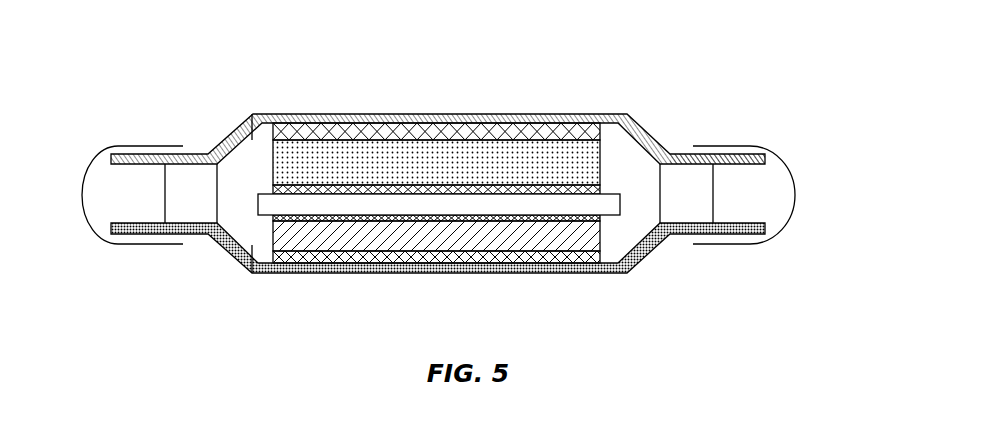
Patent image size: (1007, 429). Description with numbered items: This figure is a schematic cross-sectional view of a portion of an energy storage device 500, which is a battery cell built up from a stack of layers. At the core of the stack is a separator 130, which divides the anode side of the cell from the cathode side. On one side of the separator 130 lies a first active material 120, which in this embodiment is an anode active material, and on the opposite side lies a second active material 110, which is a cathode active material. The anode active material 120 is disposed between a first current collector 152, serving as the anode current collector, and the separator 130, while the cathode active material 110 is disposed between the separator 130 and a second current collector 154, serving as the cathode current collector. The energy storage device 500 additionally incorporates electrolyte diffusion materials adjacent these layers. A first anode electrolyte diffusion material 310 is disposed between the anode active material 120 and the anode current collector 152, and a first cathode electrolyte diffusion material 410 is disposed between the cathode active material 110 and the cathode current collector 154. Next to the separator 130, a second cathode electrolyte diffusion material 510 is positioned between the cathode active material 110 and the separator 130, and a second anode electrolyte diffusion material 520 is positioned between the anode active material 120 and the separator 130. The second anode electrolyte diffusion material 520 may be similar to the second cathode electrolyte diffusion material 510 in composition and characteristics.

The energy storage device 500 is at (116, 88).
The second active material 110 is at (472, 137).
The first active material 120 is at (297, 214).
The separator 130 is at (378, 183).
The first current collector 152 is at (767, 238).
The second current collector 154 is at (718, 160).
The first anode electrolyte diffusion material 310 is at (537, 268).
The first cathode electrolyte diffusion material 410 is at (553, 128).
The second cathode electrolyte diffusion material 510 is at (577, 187).
The second anode electrolyte diffusion material 520 is at (587, 225).